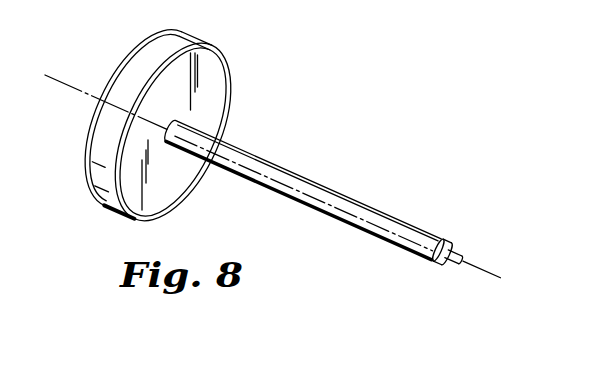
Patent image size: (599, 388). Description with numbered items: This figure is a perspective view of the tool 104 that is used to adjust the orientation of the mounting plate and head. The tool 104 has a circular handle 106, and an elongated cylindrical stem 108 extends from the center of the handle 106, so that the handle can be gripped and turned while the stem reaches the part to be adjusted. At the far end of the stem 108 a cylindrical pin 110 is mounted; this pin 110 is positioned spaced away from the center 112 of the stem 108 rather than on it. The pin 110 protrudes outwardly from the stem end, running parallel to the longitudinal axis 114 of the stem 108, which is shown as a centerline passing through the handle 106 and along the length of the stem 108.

The tool 104 is at (282, 162).
The circular handle 106 is at (104, 178).
The elongated cylindrical stem 108 is at (317, 207).
The cylindrical pin 110 is at (460, 266).
The center of the stem 112 is at (453, 241).
The longitudinal axis 114 is at (60, 77).